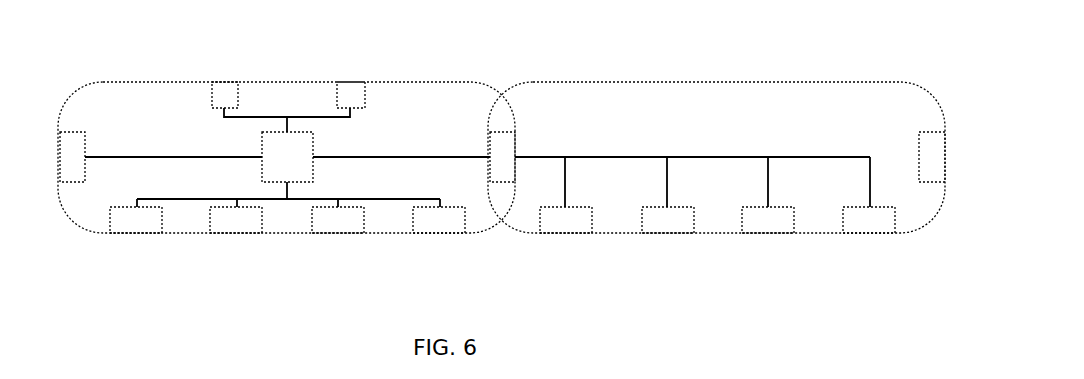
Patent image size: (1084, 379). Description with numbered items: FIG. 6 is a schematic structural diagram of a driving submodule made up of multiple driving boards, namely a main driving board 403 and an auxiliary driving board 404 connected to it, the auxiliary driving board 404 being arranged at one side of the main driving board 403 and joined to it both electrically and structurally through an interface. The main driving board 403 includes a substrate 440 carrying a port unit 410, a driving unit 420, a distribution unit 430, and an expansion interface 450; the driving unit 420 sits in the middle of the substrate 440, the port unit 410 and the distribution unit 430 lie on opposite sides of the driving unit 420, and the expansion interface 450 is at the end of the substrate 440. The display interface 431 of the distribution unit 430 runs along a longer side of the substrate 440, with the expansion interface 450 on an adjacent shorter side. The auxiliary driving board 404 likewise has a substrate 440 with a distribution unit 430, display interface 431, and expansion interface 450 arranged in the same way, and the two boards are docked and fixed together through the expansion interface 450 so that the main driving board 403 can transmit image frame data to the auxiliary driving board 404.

The main driving board 403 is at (148, 72).
The auxiliary driving board 404 is at (853, 70).
The port unit 410 is at (225, 82).
The driving unit 420 is at (288, 157).
The distribution unit 430 is at (452, 248).
The display interface 431 is at (137, 233).
The substrate 440 is at (413, 108).
The expansion interface 450 is at (502, 158).